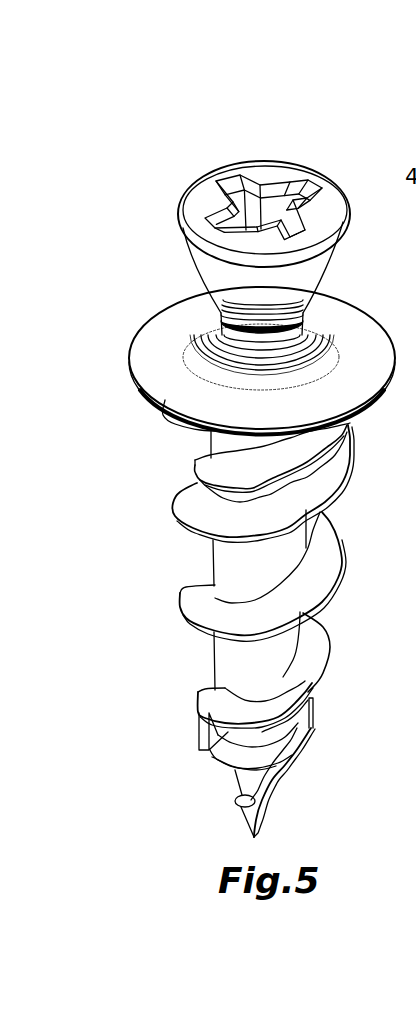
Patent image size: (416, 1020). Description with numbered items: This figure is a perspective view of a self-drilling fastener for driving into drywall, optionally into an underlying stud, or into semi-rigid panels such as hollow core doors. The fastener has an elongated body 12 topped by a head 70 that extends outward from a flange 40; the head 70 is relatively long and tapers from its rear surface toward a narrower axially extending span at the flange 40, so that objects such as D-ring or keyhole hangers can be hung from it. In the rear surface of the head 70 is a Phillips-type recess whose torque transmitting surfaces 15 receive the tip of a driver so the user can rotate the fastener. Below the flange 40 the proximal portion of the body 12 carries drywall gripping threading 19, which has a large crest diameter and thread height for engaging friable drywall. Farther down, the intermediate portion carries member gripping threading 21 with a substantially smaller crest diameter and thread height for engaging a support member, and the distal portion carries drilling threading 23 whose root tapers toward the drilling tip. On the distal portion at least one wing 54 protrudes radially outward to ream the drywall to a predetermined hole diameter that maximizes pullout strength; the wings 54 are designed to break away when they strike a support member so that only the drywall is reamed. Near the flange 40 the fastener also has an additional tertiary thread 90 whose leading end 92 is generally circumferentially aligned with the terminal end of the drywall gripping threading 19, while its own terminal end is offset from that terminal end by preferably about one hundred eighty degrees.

The elongated body 12 is at (220, 562).
The torque transmitting surfaces 15 is at (246, 190).
The drywall gripping threading 19 is at (320, 494).
The member gripping threading 21 is at (282, 697).
The drilling threading 23 is at (270, 826).
The flange 40 is at (342, 320).
The wing 54 is at (200, 744).
The head 70 is at (230, 275).
The tertiary thread 90 is at (318, 436).
The leading end 92 is at (200, 462).